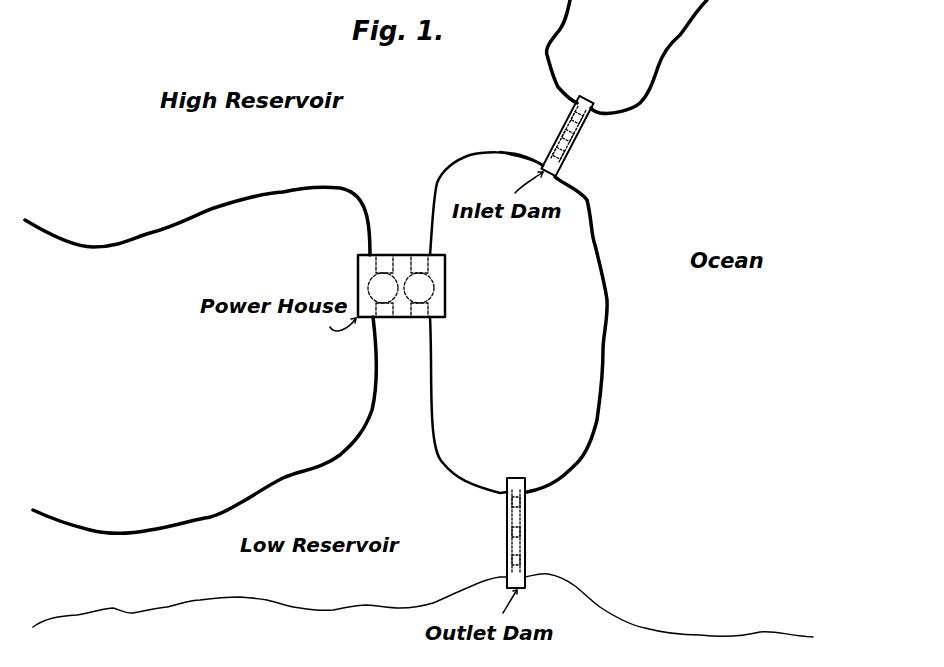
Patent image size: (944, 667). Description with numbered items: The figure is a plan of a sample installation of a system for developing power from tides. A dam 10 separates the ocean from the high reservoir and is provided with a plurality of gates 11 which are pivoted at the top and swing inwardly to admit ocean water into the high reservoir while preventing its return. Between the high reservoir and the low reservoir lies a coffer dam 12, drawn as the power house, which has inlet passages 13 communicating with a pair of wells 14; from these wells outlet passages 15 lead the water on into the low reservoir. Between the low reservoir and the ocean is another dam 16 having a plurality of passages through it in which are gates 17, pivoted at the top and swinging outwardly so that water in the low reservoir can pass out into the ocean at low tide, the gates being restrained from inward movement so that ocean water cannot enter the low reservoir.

The dam 10 is at (585, 132).
The gates 11 is at (571, 115).
The coffer dam 12 is at (401, 253).
The inlet passages 13 is at (381, 255).
The wells 14 is at (358, 279).
The outlet passages 15 is at (412, 322).
The dam 16 is at (526, 517).
The gates 17 is at (528, 558).